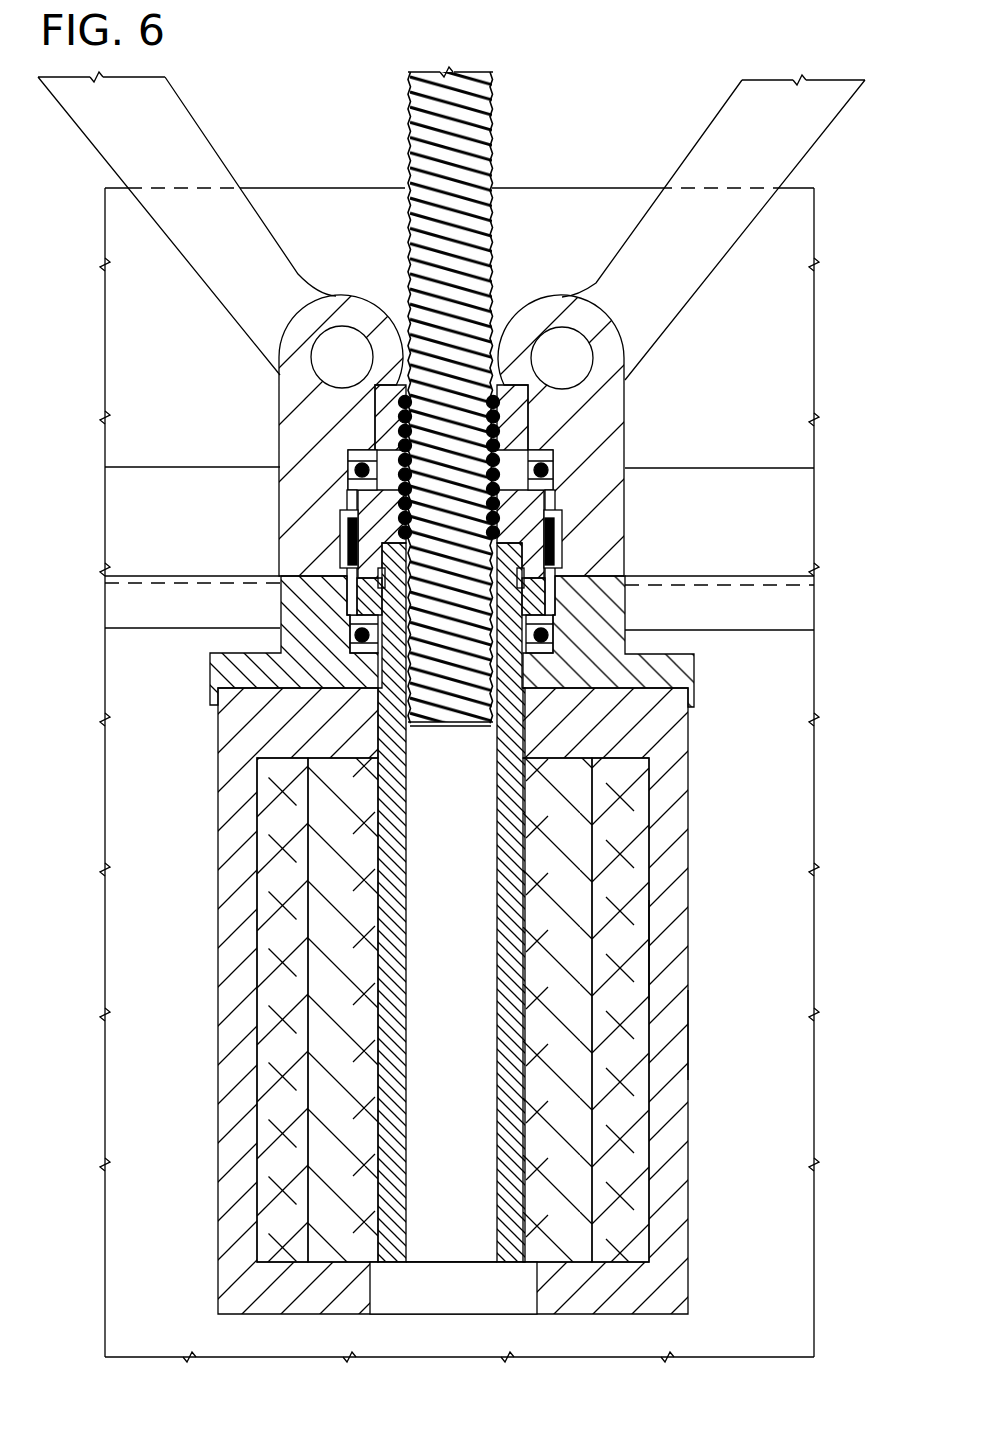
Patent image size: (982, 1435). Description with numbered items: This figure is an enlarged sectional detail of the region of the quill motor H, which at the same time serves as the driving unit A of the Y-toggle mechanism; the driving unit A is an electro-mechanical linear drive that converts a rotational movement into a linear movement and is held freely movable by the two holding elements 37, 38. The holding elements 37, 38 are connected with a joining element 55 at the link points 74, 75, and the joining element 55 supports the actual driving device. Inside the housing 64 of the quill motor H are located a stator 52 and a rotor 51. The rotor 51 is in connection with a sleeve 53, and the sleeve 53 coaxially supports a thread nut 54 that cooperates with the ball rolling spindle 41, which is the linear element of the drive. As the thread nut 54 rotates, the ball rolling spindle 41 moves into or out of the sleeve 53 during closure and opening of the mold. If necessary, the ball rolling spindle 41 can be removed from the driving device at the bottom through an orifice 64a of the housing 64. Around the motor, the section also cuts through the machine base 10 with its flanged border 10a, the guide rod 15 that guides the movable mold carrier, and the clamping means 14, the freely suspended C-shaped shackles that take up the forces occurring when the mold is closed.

The machine base 10 is at (180, 774).
The flanged border 10a is at (866, 650).
The clamping means 14 is at (186, 342).
The guide rod 15 is at (204, 545).
The holding element 37 is at (152, 122).
The holding element 38 is at (757, 138).
The ball rolling spindle 41 is at (467, 143).
The rotor 51 is at (340, 1048).
The stator 52 is at (270, 935).
The sleeve 53 is at (385, 823).
The thread nut 54 is at (383, 437).
The joining element 55 is at (585, 440).
The housing 64 is at (233, 1185).
The orifice 64a is at (432, 1283).
The link point 74 is at (339, 350).
The link point 75 is at (555, 353).
The quill motor H is at (650, 952).
The driving unit A is at (688, 1036).